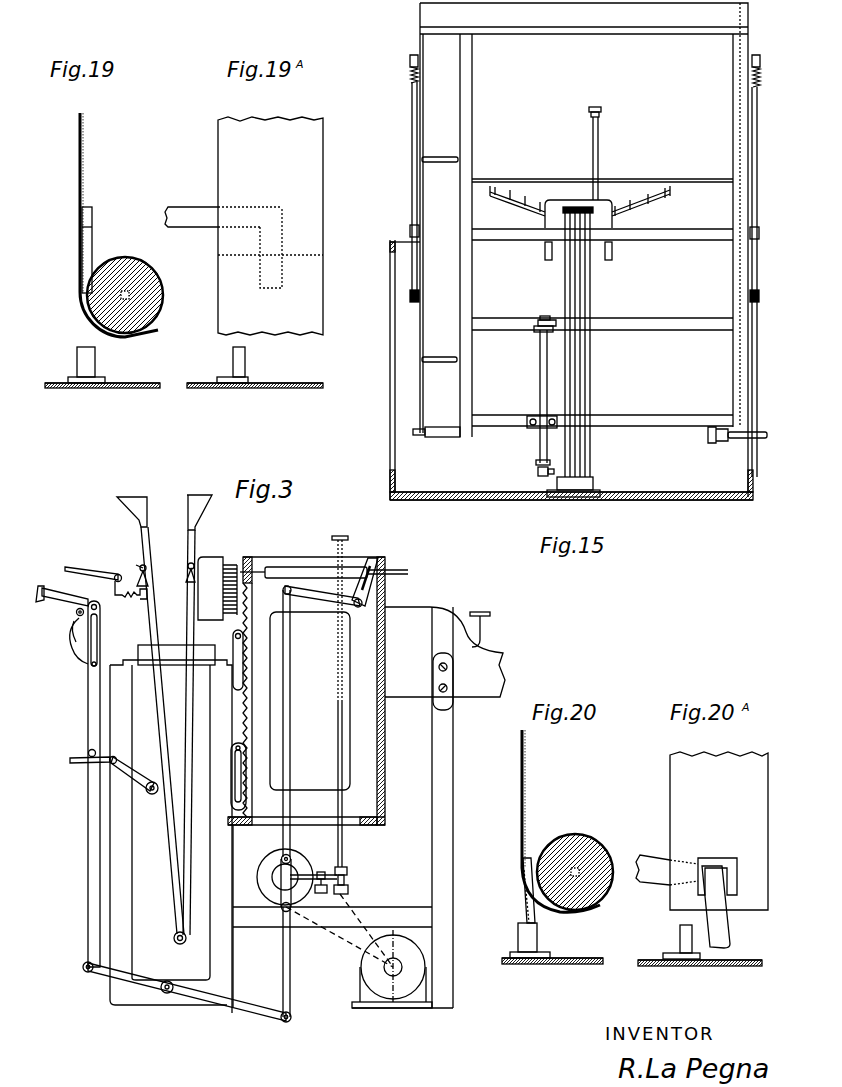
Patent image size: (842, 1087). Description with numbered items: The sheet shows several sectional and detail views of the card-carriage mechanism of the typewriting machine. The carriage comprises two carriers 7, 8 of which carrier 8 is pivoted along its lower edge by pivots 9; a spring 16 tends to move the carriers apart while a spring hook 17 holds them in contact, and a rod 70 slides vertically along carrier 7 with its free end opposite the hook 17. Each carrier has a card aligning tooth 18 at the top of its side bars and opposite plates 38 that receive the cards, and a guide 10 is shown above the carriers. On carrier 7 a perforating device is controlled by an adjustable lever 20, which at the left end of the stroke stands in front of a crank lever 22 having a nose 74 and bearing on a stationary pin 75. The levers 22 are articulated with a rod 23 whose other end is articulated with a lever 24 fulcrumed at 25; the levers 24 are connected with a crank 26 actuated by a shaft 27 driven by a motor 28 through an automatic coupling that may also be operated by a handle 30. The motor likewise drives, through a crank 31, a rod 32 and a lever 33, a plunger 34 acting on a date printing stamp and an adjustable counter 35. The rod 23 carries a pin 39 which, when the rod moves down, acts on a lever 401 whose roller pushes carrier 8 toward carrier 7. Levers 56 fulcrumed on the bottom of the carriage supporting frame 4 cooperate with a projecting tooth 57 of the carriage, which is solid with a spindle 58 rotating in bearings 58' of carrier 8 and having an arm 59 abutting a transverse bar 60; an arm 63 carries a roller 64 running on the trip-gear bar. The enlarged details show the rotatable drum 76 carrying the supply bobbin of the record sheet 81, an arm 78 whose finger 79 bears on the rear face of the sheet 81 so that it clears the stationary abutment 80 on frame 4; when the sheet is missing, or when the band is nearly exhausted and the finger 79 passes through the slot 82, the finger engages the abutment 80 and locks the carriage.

In FIG. 15, the carriage supporting frame 4 is at (393, 333).
In FIG. 3, the carrier 7 is at (190, 893).
In FIG. 15, the carrier 8 is at (466, 88).
In FIG. 3, the carrier 8 is at (175, 895).
In FIG. 15, the pivots 9 is at (437, 438).
In FIG. 3, the guide funnel 10 is at (135, 505).
In FIG. 15, the spring 16 is at (413, 258).
In FIG. 15, the spring hook 17 is at (410, 60).
In FIG. 3, the card aligning tooth 18 is at (140, 565).
In FIG. 3, the adjustable lever 20 is at (92, 570).
In FIG. 3, the crank lever 22 is at (60, 592).
In FIG. 3, the rod 23 is at (92, 822).
In FIG. 3, the lever 24 is at (115, 975).
In FIG. 3, the fulcrum 25 is at (166, 982).
In FIG. 3, the crank 26 is at (283, 893).
In FIG. 3, the shaft 27 is at (283, 876).
In FIG. 3, the motor 28 is at (372, 975).
In FIG. 3, the handle 30 is at (350, 538).
In FIG. 3, the crank 31 is at (291, 874).
In FIG. 3, the rod 32 is at (292, 765).
In FIG. 3, the lever 33 is at (312, 590).
In FIG. 3, the plunger 34 is at (271, 567).
In FIG. 3, the adjustable counter 35 is at (209, 561).
In FIG. 3, the plates 38 is at (236, 720).
In FIG. 15, the pin 39 is at (430, 50).
In FIG. 3, the pin 39 is at (89, 752).
In FIG. 3, the lever 401 is at (112, 763).
In FIG. 15, the lever 56 is at (598, 471).
In FIG. 15, the projecting tooth 57 is at (550, 473).
In FIG. 15, the rod 58 is at (532, 394).
In FIG. 15, the bearings 58' is at (529, 399).
In FIG. 15, the arm 59 is at (560, 328).
In FIG. 15, the transverse bar 60 is at (630, 328).
In FIG. 15, the arm 63 is at (598, 147).
In FIG. 15, the roller 64 is at (601, 110).
In FIG. 15, the rod 70 is at (412, 125).
In FIG. 3, the nose 74 is at (74, 628).
In FIG. 3, the stationary pin 75 is at (77, 614).
In FIG. 19, the rotatable drum 76 is at (158, 272).
In FIG. 20, the rotatable drum 76 is at (590, 834).
In FIG. 19, the arm 78 is at (90, 238).
In FIG. 19A, the arm 78 is at (194, 207).
In FIG. 20A, the arm 78 is at (649, 872).
In FIG. 19A, the finger 79 is at (268, 272).
In FIG. 20, the finger 79 is at (523, 906).
In FIG. 20A, the finger 79 is at (722, 938).
In FIG. 19, the stationary abutment 80 is at (95, 363).
In FIG. 19A, the stationary abutment 80 is at (245, 362).
In FIG. 20, the stationary abutment 80 is at (538, 942).
In FIG. 20A, the stationary abutment 80 is at (682, 938).
In FIG. 19, the sheet 81 is at (84, 153).
In FIG. 19A, the sheet 81 is at (227, 140).
In FIG. 20, the sheet 81 is at (528, 788).
In FIG. 20A, the sheet 81 is at (683, 775).
In FIG. 20A, the slot 82 is at (729, 858).